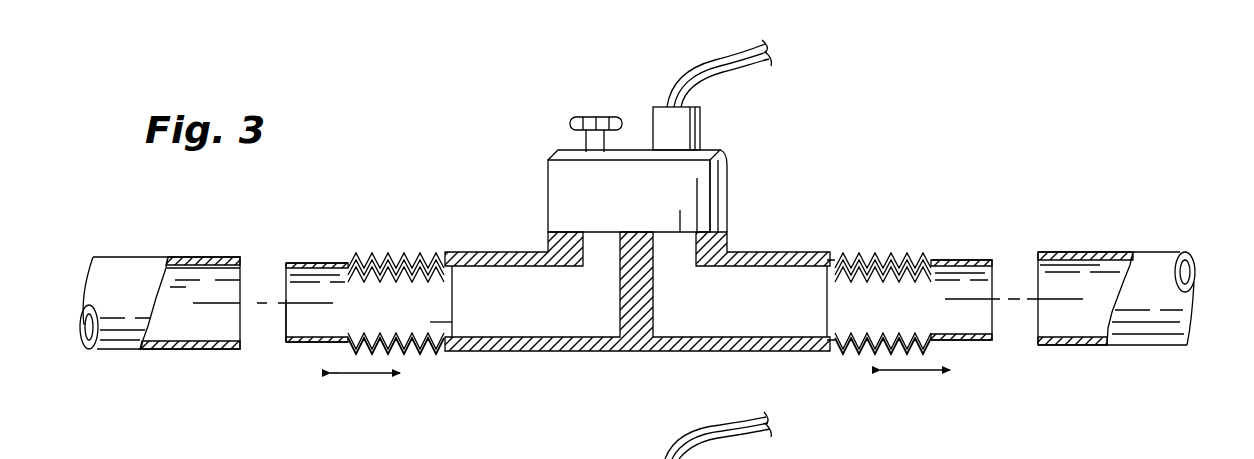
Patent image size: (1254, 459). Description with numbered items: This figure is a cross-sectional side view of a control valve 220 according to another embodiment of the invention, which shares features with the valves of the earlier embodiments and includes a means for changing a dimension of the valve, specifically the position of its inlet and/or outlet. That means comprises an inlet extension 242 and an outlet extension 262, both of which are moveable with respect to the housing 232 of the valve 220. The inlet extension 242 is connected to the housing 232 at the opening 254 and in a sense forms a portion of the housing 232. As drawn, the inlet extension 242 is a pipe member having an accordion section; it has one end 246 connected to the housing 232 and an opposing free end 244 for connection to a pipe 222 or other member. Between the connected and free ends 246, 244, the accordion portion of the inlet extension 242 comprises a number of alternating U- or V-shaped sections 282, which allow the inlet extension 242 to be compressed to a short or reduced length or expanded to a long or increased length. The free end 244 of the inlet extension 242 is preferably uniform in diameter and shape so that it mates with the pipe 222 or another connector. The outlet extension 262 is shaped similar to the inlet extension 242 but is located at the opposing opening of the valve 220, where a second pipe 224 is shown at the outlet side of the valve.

The control valve 220 is at (837, 162).
The pipe 222 is at (204, 248).
The second tube 224 is at (1058, 249).
The housing 232 is at (770, 251).
The inlet extension 242 is at (367, 311).
The free end 244 is at (284, 349).
The connected end 246 is at (437, 318).
The opening 254 is at (455, 287).
The outlet extension 262 is at (961, 259).
The alternating U- or V-shaped sections 282 is at (432, 360).